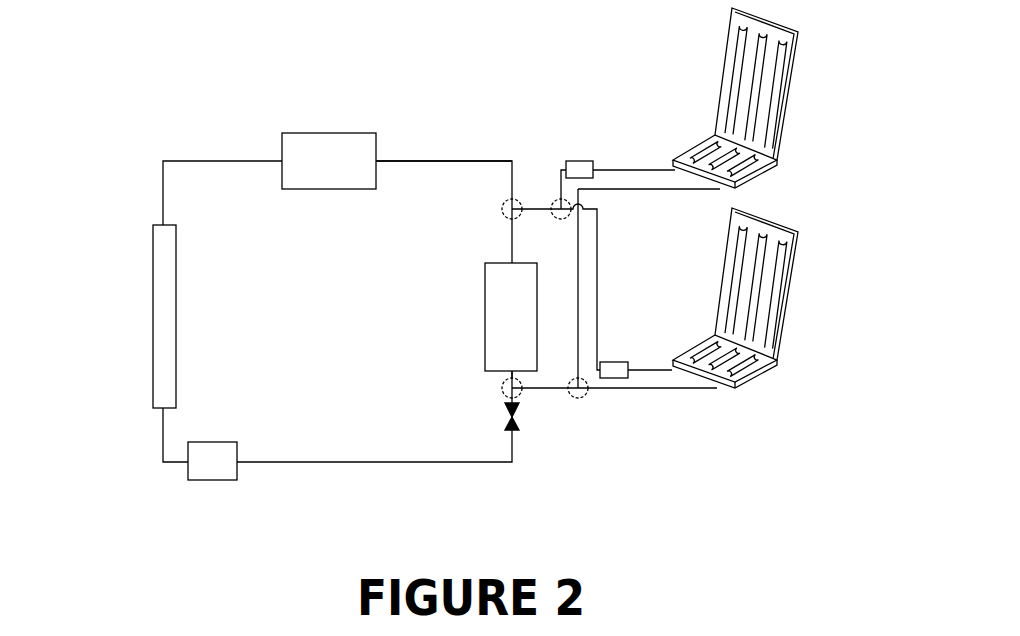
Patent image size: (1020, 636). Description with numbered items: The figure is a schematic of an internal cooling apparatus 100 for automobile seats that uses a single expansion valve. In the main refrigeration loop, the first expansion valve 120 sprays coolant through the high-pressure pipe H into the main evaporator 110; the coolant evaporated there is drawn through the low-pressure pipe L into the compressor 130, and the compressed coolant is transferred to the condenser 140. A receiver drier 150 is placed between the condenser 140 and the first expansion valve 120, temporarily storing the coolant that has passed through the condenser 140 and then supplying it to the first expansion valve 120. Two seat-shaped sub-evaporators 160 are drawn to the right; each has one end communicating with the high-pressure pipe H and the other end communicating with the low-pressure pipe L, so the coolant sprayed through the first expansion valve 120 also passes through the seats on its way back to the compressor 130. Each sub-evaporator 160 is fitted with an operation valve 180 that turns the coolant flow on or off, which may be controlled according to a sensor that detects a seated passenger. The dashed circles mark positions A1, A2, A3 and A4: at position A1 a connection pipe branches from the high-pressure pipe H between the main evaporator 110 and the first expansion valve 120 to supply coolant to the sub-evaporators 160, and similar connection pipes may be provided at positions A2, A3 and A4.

The internal cooling apparatus 100 is at (438, 74).
The main evaporator 110 is at (485, 308).
The first expansion valve 120 is at (516, 432).
The compressor 130 is at (323, 133).
The condenser 140 is at (153, 233).
The receiver drier 150 is at (212, 480).
The sub-evaporators 160 is at (802, 229).
The operation valve 180 is at (578, 161).
The low-pressure pipe L is at (483, 158).
The high-pressure pipe H is at (502, 380).
The position A1 is at (502, 390).
The position A2 is at (578, 398).
The position A3 is at (560, 219).
The position A4 is at (502, 209).